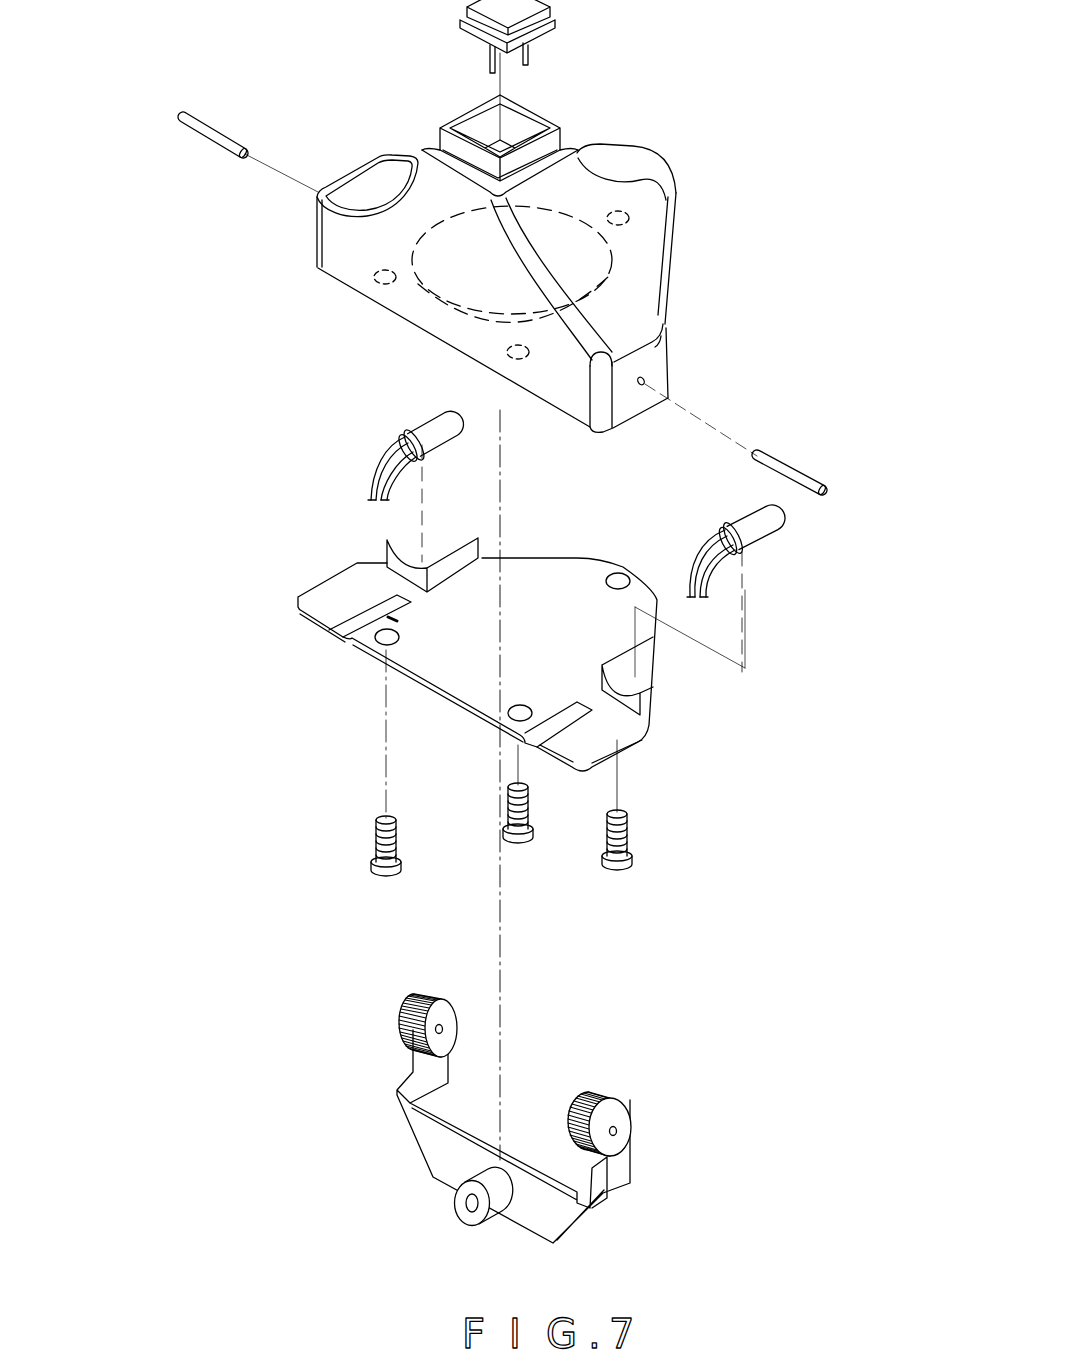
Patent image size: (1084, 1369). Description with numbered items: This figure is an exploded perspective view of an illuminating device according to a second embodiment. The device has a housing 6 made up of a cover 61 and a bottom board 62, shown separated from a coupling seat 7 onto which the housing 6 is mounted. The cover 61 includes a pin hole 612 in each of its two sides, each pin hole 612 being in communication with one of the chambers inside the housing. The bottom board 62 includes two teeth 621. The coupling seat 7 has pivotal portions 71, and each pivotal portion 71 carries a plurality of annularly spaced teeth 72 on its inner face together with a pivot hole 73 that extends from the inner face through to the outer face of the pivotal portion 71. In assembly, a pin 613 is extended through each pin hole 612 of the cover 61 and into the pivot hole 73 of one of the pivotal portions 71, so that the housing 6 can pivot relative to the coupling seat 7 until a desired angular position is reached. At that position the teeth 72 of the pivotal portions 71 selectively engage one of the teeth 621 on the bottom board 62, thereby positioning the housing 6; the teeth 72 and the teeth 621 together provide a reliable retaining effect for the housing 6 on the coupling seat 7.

The housing 6 is at (285, 502).
The cover 61 is at (678, 278).
The pin hole 612 is at (642, 381).
The pin 613 is at (787, 467).
The bottom board 62 is at (660, 678).
The teeth 621 is at (548, 708).
The coupling seat 7 is at (613, 1196).
The pivotal portion 71 is at (615, 1121).
The teeth 72 is at (594, 1092).
The pivot hole 73 is at (617, 1132).